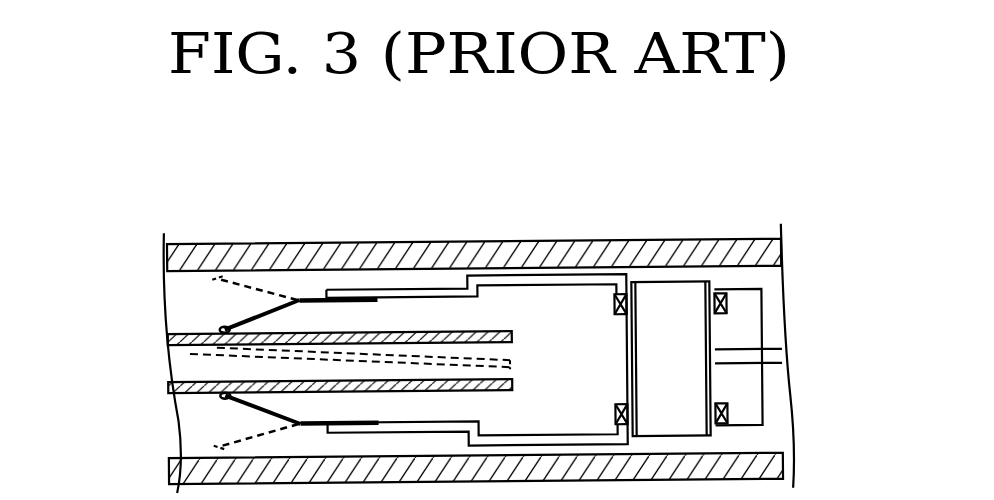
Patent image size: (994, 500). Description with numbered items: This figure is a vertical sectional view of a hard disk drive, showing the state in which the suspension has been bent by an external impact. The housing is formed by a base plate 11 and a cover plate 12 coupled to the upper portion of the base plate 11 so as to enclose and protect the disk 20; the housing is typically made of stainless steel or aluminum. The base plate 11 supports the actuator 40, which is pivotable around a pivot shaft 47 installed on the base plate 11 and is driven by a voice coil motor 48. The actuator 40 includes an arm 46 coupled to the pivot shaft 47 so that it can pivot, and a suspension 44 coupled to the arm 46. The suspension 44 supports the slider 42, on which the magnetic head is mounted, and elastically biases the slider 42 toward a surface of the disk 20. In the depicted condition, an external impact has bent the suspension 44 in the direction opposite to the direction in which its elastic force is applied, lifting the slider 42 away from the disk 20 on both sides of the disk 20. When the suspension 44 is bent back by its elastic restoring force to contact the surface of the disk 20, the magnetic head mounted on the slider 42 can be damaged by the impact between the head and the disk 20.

The base plate 11 is at (795, 470).
The cover plate 12 is at (738, 252).
The disk 20 is at (188, 331).
The actuator 40 is at (566, 266).
The slider 42 is at (220, 346).
The suspension 44 is at (276, 297).
The arm 46 is at (481, 290).
The pivot shaft 47 is at (674, 300).
The voice coil motor 48 is at (772, 299).